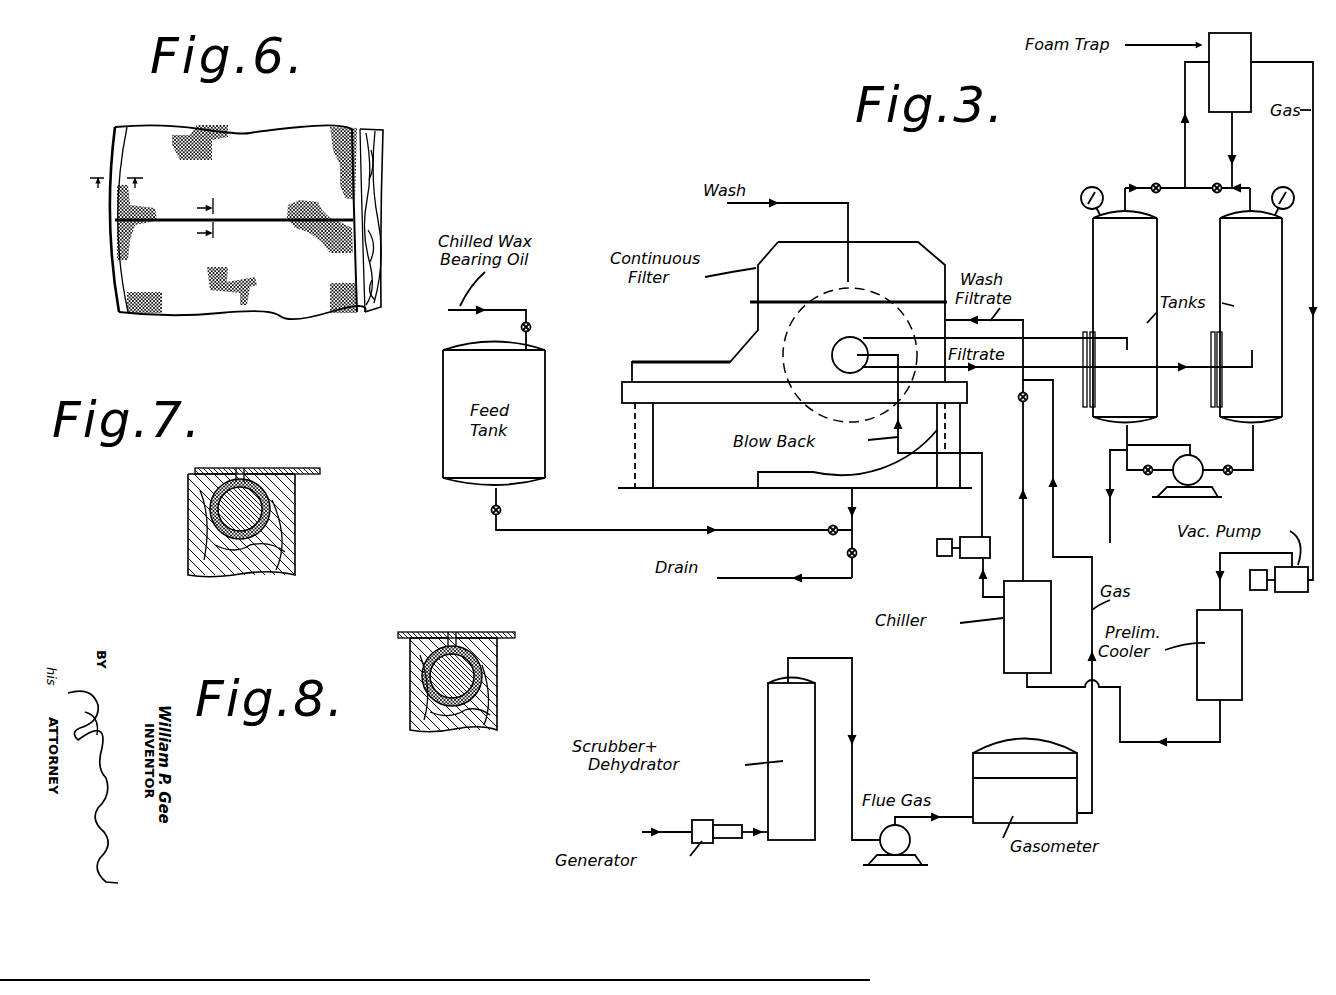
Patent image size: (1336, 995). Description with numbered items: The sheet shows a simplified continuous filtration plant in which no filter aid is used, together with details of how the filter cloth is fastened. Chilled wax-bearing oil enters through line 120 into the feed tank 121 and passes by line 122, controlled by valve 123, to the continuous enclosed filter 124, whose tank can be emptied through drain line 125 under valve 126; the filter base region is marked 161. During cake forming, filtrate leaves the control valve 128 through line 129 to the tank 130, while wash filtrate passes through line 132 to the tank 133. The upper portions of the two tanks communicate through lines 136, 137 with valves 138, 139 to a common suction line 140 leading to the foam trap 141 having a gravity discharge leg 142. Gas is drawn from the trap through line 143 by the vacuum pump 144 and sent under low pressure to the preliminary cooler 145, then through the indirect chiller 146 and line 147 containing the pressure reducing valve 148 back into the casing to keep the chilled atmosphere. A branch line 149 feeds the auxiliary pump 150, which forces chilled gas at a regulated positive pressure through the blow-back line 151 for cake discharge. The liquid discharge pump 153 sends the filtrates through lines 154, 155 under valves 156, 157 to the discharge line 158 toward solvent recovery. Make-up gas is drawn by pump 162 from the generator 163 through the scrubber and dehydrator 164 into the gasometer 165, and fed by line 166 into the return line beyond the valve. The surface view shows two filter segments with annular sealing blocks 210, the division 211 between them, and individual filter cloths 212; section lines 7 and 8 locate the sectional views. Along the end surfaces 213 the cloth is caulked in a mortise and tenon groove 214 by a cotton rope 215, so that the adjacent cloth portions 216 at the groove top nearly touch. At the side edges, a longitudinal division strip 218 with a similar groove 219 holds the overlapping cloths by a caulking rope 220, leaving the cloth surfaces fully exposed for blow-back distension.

In FIG. 6, the section line 7— 7 is at (116, 174).
In FIG. 6, the section line 8— 8 is at (212, 220).
In FIG. 3, the line 120 is at (503, 310).
In FIG. 3, the feed tank 121 is at (545, 397).
In FIG. 3, the line 122 is at (657, 524).
In FIG. 3, the valve 123 is at (830, 527).
In FIG. 3, the continuous enclosed filter 124 is at (741, 352).
In FIG. 3, the drain line 125 is at (756, 582).
In FIG. 3, the valve 126 is at (846, 553).
In FIG. 3, the control valve 128 is at (832, 355).
In FIG. 3, the line 129 is at (1068, 367).
In FIG. 3, the tank 130 is at (1235, 268).
In FIG. 3, the line 132 is at (885, 346).
In FIG. 3, the tank 133 is at (1105, 268).
In FIG. 3, the line 136 is at (1195, 191).
In FIG. 3, the line 137 is at (1170, 183).
In FIG. 3, the valve 138 is at (1221, 186).
In FIG. 3, the valve 139 is at (1153, 188).
In FIG. 3, the common suction line 140 is at (1183, 131).
In FIG. 3, the foam trap 141 is at (1240, 87).
In FIG. 3, the gravity discharge leg 142 is at (1233, 137).
In FIG. 3, the line 143 is at (1312, 510).
In FIG. 3, the vacuum pump 144 is at (1295, 594).
In FIG. 3, the preliminary cooler 145 is at (1242, 644).
In FIG. 3, the chiller 146 is at (1003, 639).
In FIG. 3, the line 147 is at (1022, 474).
In FIG. 3, the pressure reducing valve 148 is at (1018, 398).
In FIG. 3, the branch line 149 is at (982, 586).
In FIG. 3, the auxiliary pump 150 is at (824, 203).
In FIG. 3, the blow-back line 151 is at (998, 436).
In FIG. 3, the liquid discharge pump 153 is at (1192, 463).
In FIG. 3, the line 154 is at (1254, 449).
In FIG. 3, the line 155 is at (1125, 436).
In FIG. 3, the valve 156 is at (1228, 476).
In FIG. 3, the valve 157 is at (1147, 476).
In FIG. 3, the discharge line 158 is at (1112, 529).
In FIG. 3, the filter base 161 is at (683, 441).
In FIG. 3, the pump 162 is at (910, 839).
In FIG. 3, the generator 163 is at (724, 825).
In FIG. 3, the scrubber and dehydrator 164 is at (767, 717).
In FIG. 3, the gasometer 165 is at (1000, 746).
In FIG. 3, the line 166 is at (1056, 518).
In FIG. 6, the annular sealing blocks 210 is at (375, 165).
In FIG. 7, the annular sealing blocks 210 is at (282, 542).
In FIG. 6, the division 211 is at (158, 226).
In FIG. 6, the filter cloths 212 is at (271, 138).
In FIG. 7, the filter cloths 212 is at (280, 469).
In FIG. 8, the filter cloths 212 is at (487, 636).
In FIG. 6, the end surfaces 213 is at (115, 246).
In FIG. 7, the groove 214 is at (268, 498).
In FIG. 7, the rope 215 is at (232, 512).
In FIG. 7, the adjacent portions of the cloth 216 is at (242, 466).
In FIG. 8, the division strip 218 is at (485, 697).
In FIG. 8, the groove 219 is at (490, 672).
In FIG. 8, the caulking rope 220 is at (432, 668).